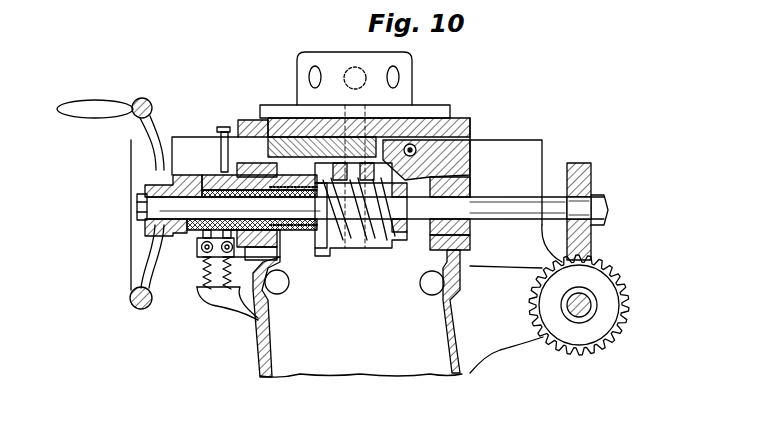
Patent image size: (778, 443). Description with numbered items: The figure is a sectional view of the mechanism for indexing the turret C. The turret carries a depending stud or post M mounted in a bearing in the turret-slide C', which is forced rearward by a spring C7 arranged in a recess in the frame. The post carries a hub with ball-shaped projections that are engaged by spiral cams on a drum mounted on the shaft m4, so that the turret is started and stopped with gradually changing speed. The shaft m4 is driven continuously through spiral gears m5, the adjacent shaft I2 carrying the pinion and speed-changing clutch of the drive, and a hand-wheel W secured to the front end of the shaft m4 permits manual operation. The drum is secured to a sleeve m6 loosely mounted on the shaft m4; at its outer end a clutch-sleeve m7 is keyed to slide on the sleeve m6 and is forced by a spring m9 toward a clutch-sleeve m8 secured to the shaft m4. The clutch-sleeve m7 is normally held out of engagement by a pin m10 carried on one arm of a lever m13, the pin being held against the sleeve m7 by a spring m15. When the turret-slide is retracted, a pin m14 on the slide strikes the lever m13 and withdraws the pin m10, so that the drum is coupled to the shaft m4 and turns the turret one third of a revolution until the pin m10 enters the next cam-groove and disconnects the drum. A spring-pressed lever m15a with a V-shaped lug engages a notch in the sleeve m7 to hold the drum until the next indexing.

The hand-wheel W is at (137, 99).
The clutch-sleeve m8 is at (176, 175).
The clutch-sleeve m7 is at (203, 167).
The shaft m4 is at (370, 207).
The lever m13 is at (221, 145).
The pin m14 is at (233, 131).
The turret C is at (369, 78).
The stud or post M is at (412, 112).
The turret-slide C' is at (379, 127).
The spring C7 is at (430, 150).
The spring m9 is at (314, 256).
The sleeve m6 is at (282, 230).
The spring-pressed lever m15a is at (198, 244).
The spring m15 is at (222, 262).
The pin m10 is at (236, 268).
The spiral gears m5 is at (592, 176).
The shaft I2 is at (592, 303).